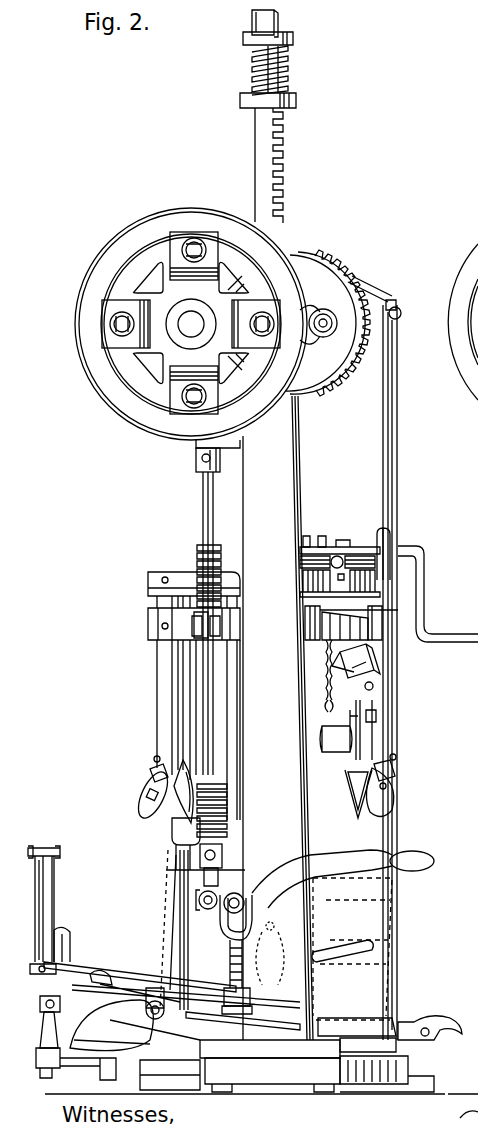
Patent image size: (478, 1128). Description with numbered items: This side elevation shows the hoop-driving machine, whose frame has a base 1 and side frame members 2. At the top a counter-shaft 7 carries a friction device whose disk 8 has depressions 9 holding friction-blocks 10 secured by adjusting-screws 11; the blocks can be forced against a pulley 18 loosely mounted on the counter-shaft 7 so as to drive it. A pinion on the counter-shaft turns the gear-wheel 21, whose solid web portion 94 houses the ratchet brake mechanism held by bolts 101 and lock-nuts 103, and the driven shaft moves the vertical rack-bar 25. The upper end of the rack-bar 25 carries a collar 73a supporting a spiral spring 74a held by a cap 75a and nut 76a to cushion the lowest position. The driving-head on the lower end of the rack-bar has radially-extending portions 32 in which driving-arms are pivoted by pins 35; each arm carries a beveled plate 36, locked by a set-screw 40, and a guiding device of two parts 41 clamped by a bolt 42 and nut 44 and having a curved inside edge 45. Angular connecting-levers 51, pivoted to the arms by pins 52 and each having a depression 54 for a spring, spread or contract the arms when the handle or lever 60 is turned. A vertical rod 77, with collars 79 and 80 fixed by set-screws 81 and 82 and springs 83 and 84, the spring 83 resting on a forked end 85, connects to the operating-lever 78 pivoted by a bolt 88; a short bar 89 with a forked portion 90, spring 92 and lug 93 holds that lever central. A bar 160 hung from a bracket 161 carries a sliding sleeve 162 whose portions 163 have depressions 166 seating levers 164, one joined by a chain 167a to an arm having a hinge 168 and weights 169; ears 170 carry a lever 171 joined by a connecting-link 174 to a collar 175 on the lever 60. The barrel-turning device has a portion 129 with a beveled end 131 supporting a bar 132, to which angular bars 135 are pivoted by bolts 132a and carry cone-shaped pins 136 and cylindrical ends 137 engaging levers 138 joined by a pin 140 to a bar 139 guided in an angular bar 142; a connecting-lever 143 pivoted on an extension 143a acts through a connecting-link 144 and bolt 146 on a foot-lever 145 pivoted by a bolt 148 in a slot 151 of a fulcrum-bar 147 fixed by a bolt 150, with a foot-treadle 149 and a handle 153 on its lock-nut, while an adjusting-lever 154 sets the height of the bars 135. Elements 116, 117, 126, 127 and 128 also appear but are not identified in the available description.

The base 1 is at (245, 1080).
The side frame members 2 is at (278, 718).
The counter-shaft 7 is at (191, 324).
The disk 8 is at (190, 316).
The depressions 9 is at (150, 308).
The friction-blocks 10 is at (106, 318).
The adjusting-screws 11 is at (197, 240).
The pulley 18 is at (191, 324).
The gear-wheel 21 is at (315, 255).
The rack-bar 25 is at (251, 165).
The radially-extending portions 32 is at (148, 620).
The pin 35 is at (162, 629).
The plate 36 is at (150, 776).
The set-screw 40 is at (154, 759).
The parts of guiding device 41 is at (150, 812).
The bolt 42 is at (392, 788).
The nut 44 is at (142, 792).
The curved inside edge 45 is at (372, 850).
The connecting-levers 51 is at (155, 572).
The pins 52 is at (168, 578).
The elongated depression 54 is at (160, 699).
The operating handle or lever 60 is at (424, 556).
The collar 73a is at (296, 100).
The spiral spring 74a is at (252, 68).
The cap 75a is at (293, 40).
The nut 76a is at (252, 20).
The vertical rod 77 is at (196, 623).
The operating-lever 78 is at (343, 879).
The upper collar 79 is at (206, 456).
The lower collar 80 is at (222, 855).
The set-screw 81 is at (226, 460).
The set-screw 82 is at (218, 880).
The spiral spring 83 is at (218, 569).
The spiral spring 84 is at (228, 824).
The forked end 85 is at (222, 626).
The bolt 88 is at (246, 898).
The short vertical bar 89 is at (230, 955).
The forked portion 90 is at (224, 915).
The spiral spring 92 is at (250, 985).
The lug 93 is at (252, 1004).
The web portion 94 is at (321, 323).
The bolts 101 is at (326, 331).
The lock-nuts 103 is at (326, 310).
The rod 116 is at (201, 930).
The block 117 is at (172, 838).
The plate 126 is at (340, 1047).
The knurled nut 127 is at (398, 1048).
The plate 128 is at (270, 1049).
The upwardly and rearwardly extending portion 129 is at (111, 1025).
The beveled upper ends 131 is at (160, 986).
The horizontally-extending bar 132 is at (80, 966).
The bolts 132a is at (106, 972).
The angular bars 135 is at (243, 1023).
The cone-shaped pins 136 is at (274, 924).
The cylindrical-shaped ends 137 is at (36, 975).
The levers 138 is at (44, 897).
The vertically-extending bar 139 is at (60, 909).
The pin 140 is at (58, 851).
The angular-shaped bar 142 is at (73, 935).
The connecting-lever 143 is at (39, 1063).
The extension 143a is at (104, 1080).
The short vertical connecting-link 144 is at (39, 1027).
The foot-lever 145 is at (357, 1027).
The bolt 146 is at (64, 1003).
The fulcrum-bar 147 is at (170, 1075).
The bolt 148 is at (170, 1009).
The foot-treadle 149 is at (430, 1019).
The bolt 150 is at (272, 1075).
The slot 151 is at (156, 988).
The operating-handle 153 is at (155, 1024).
The adjusting-lever 154 is at (342, 944).
The vertically-extending bar 160 is at (406, 672).
The bracket 161 is at (374, 290).
The sleeve 162 is at (390, 540).
The outwardly-extending portions 163 is at (388, 628).
The levers 164 is at (334, 612).
The depressions 166 is at (398, 610).
The chain 167a is at (320, 668).
The hinge 168 is at (376, 680).
The weights 169 is at (348, 730).
The lugs or ears 170 is at (362, 556).
The lever 171 is at (330, 547).
The connecting-link 174 is at (348, 540).
The collar 175 is at (300, 556).